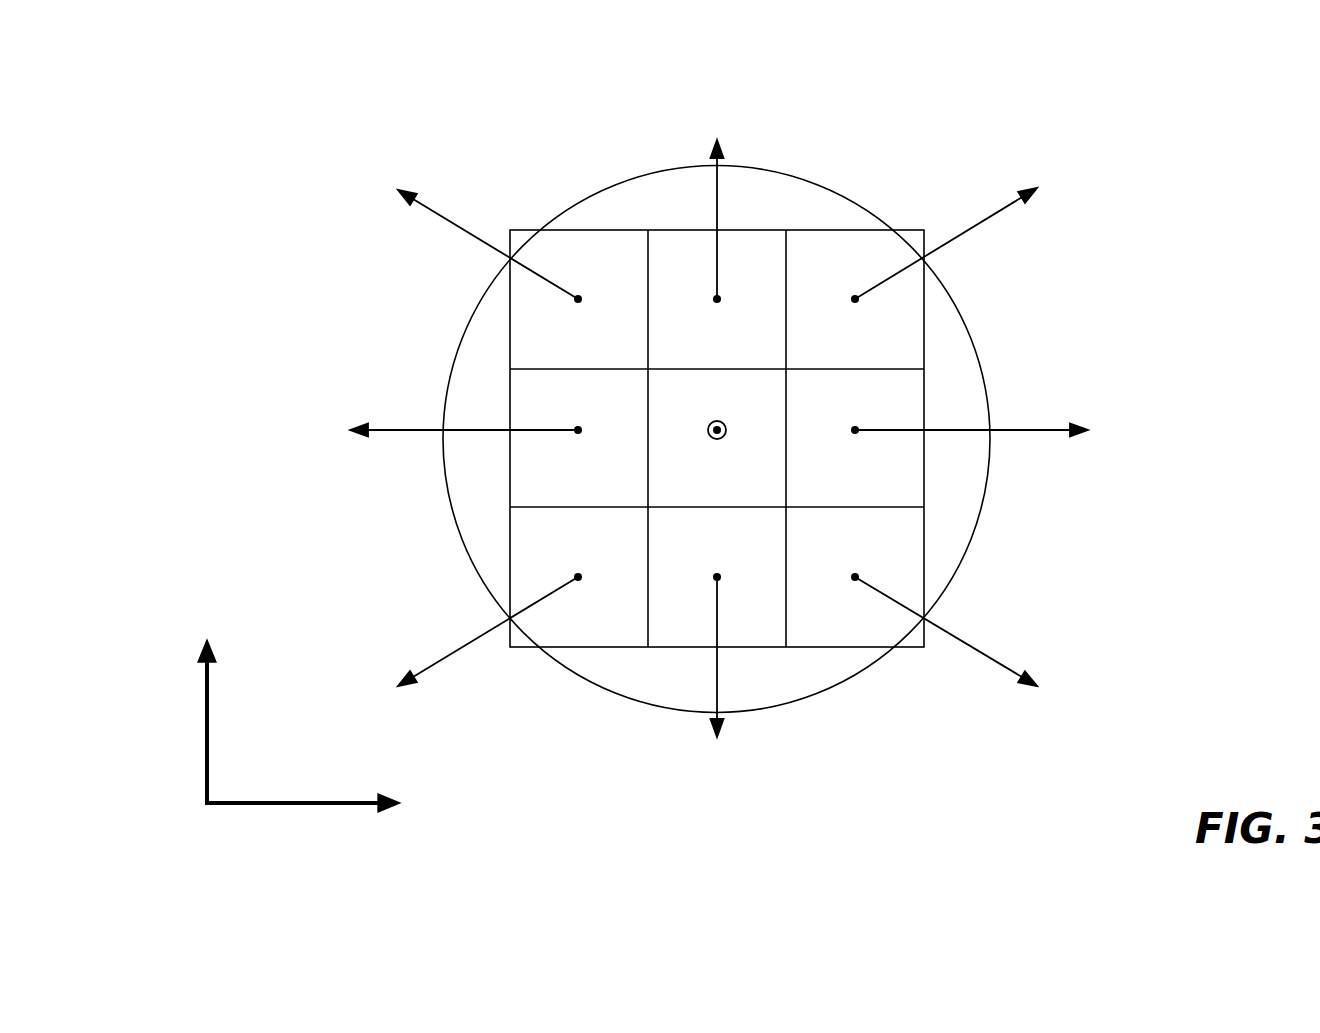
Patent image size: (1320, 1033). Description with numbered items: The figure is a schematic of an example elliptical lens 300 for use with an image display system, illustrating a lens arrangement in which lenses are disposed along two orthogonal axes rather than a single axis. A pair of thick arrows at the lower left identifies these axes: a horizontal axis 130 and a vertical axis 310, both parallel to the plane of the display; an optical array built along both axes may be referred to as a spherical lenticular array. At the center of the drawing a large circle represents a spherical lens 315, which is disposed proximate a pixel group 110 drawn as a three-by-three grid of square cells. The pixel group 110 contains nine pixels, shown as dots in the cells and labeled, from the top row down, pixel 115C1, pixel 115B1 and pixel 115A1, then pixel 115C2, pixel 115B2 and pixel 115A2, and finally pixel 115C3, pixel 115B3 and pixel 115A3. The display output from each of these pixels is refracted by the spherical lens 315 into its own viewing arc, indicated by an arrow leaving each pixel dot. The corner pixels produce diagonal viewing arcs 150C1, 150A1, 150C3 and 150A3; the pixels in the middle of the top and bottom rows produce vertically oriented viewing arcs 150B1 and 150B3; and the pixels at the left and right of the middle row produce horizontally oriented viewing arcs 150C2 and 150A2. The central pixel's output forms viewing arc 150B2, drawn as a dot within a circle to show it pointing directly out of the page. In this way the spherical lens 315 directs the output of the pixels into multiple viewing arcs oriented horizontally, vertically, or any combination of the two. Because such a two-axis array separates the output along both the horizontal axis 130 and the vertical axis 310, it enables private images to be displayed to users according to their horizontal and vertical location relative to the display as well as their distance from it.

The elliptical lens 300 is at (1195, 90).
The spherical lens 315 is at (775, 168).
The pixel group 110 is at (912, 230).
The pixel 115C1 is at (579, 299).
The pixel 115B1 is at (717, 299).
The pixel 115A1 is at (855, 299).
The pixel 115C2 is at (579, 438).
The pixel 115B2 is at (717, 438).
The pixel 115A2 is at (855, 438).
The pixel 115C3 is at (579, 577).
The pixel 115B3 is at (717, 577).
The pixel 115A3 is at (855, 577).
The viewing arc 150C1 is at (456, 234).
The viewing arc 150B1 is at (720, 204).
The viewing arc 150A1 is at (979, 234).
The viewing arc 150C2 is at (435, 436).
The viewing arc 150B2 is at (728, 449).
The viewing arc 150A2 is at (1005, 436).
The viewing arc 150C3 is at (462, 644).
The viewing arc 150B3 is at (720, 675).
The viewing arc 150A3 is at (958, 654).
The vertical axis 310 is at (187, 721).
The horizontal axis 130 is at (302, 818).